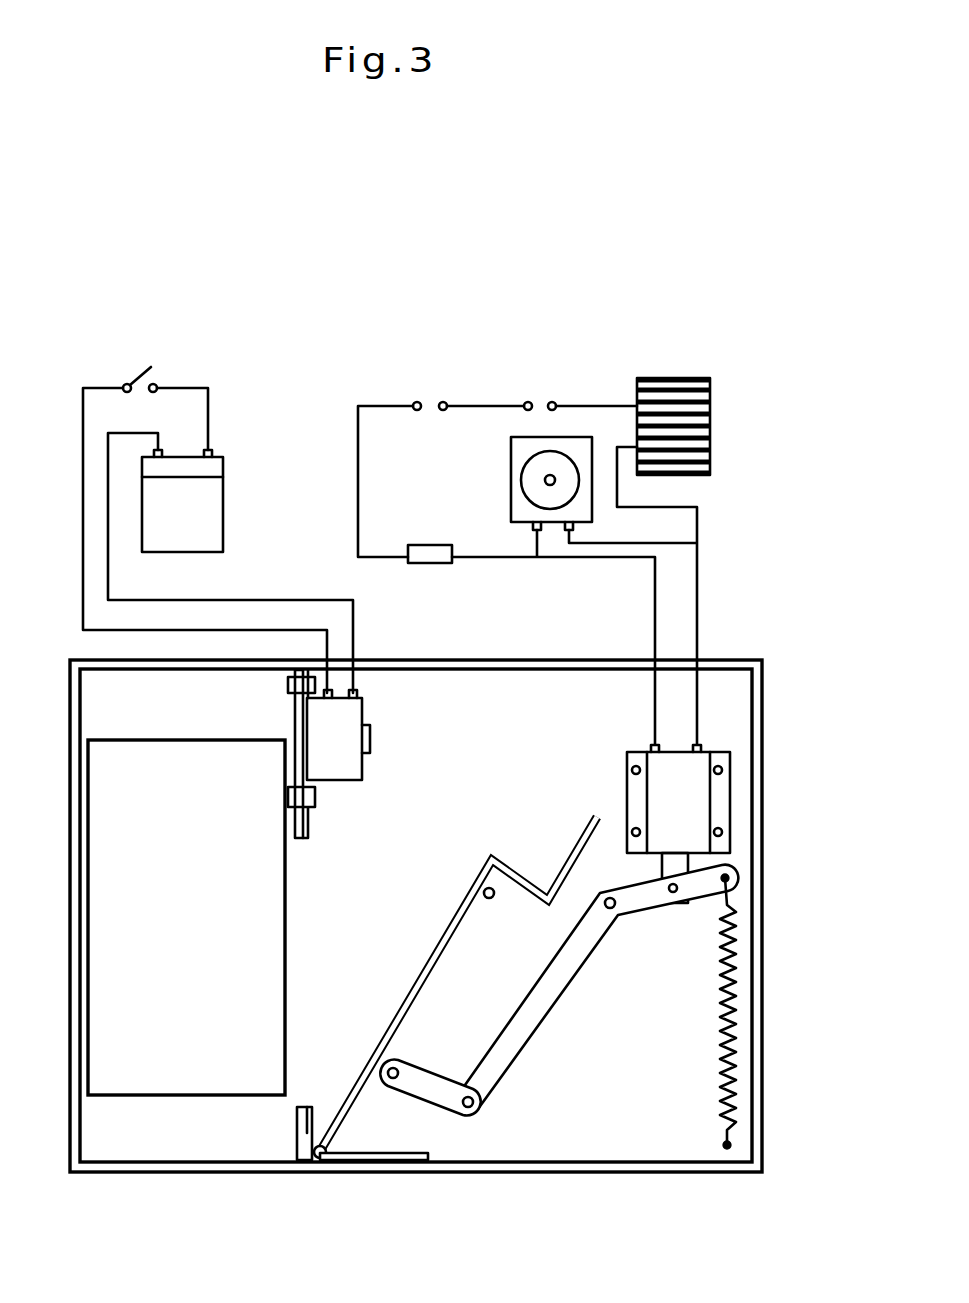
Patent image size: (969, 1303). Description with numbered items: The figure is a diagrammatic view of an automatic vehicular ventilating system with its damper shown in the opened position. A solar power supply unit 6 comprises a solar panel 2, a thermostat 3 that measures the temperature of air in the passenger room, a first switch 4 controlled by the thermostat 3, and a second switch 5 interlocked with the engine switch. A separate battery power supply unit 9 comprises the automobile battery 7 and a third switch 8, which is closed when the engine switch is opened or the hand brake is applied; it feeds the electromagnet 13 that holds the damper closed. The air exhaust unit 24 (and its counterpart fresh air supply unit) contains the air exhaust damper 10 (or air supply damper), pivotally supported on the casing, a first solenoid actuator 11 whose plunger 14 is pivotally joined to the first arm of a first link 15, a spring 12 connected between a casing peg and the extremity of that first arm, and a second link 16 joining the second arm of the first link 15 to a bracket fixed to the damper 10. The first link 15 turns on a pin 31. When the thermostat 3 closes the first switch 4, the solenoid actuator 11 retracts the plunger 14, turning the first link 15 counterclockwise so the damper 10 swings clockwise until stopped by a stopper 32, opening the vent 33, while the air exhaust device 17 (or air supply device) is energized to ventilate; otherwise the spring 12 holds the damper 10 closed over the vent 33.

The solar panel 2 is at (706, 379).
The thermostat 3 is at (436, 563).
The first switch 4 is at (423, 390).
The second switch 5 is at (538, 390).
The solar power supply unit 6 is at (520, 330).
The battery 7 is at (232, 457).
The third switch 8 is at (155, 368).
The battery power supply unit 9 is at (223, 343).
The air exhaust damper 10 is at (458, 915).
The first solenoid actuator 11 is at (632, 750).
The spring 12 is at (717, 1097).
The electromagnet 13 is at (375, 741).
The plunger 14 is at (665, 905).
The first link 15 is at (520, 1053).
The second link 16 is at (437, 1067).
The air exhaust device 17 is at (511, 483).
The air exhaust unit 24 is at (858, 613).
The pin 31 is at (613, 917).
The stopper 32 is at (491, 899).
The outlet vent 33 is at (150, 945).